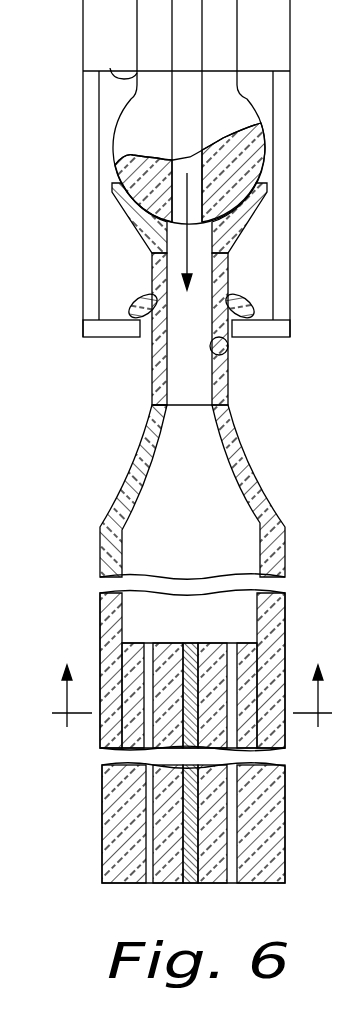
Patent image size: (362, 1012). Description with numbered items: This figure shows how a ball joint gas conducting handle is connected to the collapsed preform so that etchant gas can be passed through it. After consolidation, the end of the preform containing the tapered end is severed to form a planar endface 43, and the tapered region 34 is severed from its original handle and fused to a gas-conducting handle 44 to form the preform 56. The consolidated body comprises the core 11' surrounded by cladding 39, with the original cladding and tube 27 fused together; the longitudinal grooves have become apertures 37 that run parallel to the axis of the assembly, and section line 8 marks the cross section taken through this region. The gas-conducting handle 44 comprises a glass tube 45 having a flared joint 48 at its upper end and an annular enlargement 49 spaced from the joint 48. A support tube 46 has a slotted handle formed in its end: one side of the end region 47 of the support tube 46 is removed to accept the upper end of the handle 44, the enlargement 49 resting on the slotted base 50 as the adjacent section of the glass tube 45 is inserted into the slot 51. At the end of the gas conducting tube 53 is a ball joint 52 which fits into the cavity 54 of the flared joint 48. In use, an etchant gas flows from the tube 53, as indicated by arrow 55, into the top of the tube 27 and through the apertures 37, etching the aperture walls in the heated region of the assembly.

The support tube 46 is at (282, 32).
The end region 47 is at (293, 143).
The ball joint 52 is at (247, 117).
The gas conducting tube 53 is at (110, 68).
The cavity 54 is at (143, 185).
The flared joint 48 is at (247, 213).
The annular enlargement 49 is at (253, 313).
The slotted base 50 is at (120, 318).
The arrow 55 is at (203, 258).
The slot 51 is at (228, 350).
The glass tube 45 is at (152, 388).
The gas-conducting handle 44 is at (240, 386).
The tapered region 34 is at (260, 462).
The tube 27 is at (265, 545).
The preform 56 is at (300, 617).
The section line 8- 8 is at (188, 699).
The planar endface 43 is at (120, 883).
The core 11' is at (222, 847).
The apertures 37 is at (233, 828).
The cladding 39 is at (265, 862).